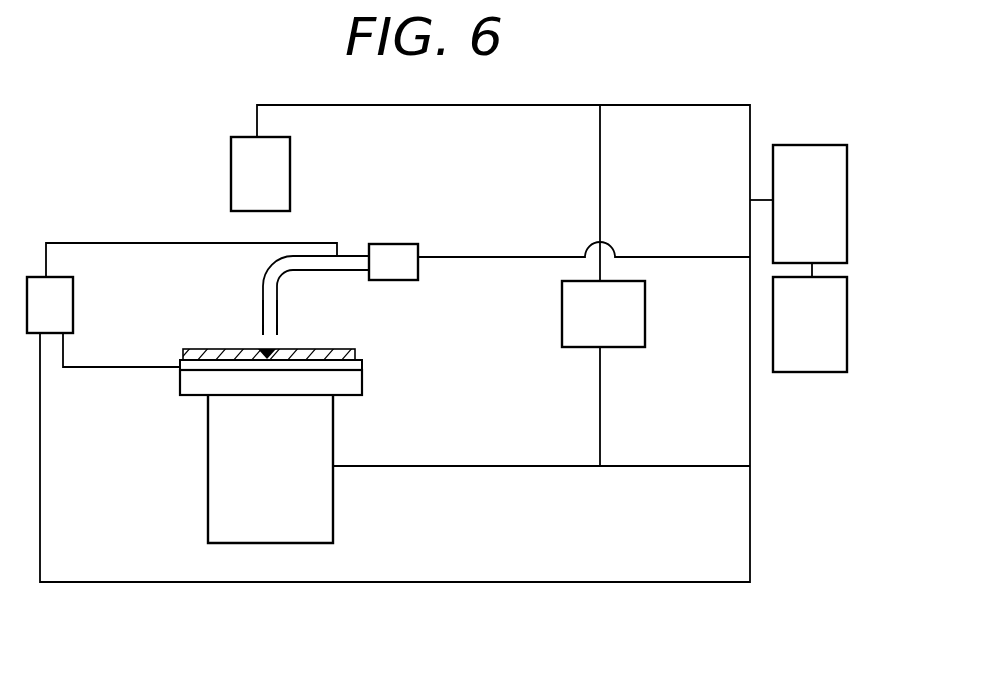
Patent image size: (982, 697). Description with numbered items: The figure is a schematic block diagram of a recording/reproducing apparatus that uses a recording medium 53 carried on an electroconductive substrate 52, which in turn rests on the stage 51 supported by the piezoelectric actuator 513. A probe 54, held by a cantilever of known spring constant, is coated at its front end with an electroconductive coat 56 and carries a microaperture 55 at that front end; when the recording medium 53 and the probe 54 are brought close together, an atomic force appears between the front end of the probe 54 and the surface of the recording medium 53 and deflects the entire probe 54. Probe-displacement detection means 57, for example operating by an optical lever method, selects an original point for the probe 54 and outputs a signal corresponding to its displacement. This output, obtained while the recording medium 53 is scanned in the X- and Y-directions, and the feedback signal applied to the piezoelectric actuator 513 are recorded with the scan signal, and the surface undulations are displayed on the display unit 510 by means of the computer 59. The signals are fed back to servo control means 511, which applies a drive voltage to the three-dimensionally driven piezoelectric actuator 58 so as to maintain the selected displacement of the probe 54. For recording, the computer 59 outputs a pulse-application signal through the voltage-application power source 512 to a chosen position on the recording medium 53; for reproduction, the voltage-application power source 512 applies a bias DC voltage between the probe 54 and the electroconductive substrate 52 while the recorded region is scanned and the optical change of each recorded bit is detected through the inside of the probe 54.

The stage 51 is at (362, 386).
The electroconductive substrate 52 is at (362, 366).
The recording medium 53 is at (355, 354).
The probe 54 is at (326, 277).
The microaperture 55 is at (262, 334).
The electroconductive coat 56 is at (263, 277).
The probe-displacement detection means 57 is at (290, 155).
The piezoelectric actuator 58 is at (410, 244).
The computer 59 is at (847, 165).
The display unit 510 is at (847, 305).
The servo control means 511 is at (645, 306).
The voltage-application power source 512 is at (73, 286).
The piezoelectric actuator 513 is at (333, 446).